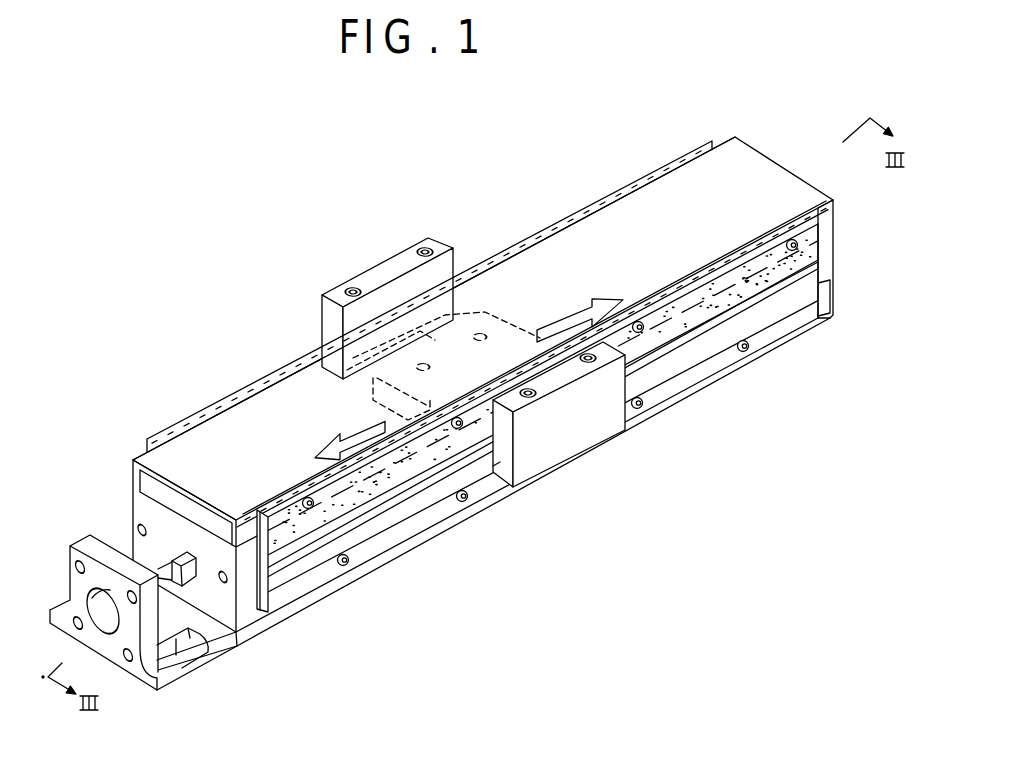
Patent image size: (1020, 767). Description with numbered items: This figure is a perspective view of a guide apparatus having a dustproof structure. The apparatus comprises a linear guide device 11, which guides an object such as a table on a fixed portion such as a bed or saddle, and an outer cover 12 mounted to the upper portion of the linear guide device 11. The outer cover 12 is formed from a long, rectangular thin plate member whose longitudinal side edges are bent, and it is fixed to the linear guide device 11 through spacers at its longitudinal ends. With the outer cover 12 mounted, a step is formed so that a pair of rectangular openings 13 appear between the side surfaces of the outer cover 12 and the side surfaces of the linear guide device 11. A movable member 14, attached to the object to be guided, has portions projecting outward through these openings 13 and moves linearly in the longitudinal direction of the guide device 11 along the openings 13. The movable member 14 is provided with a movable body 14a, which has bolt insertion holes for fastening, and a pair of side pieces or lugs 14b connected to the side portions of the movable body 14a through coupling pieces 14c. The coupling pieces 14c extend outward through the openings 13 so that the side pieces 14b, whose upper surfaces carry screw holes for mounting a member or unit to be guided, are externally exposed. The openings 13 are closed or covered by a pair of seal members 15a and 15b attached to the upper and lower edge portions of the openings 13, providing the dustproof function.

The linear guide device 11 is at (380, 584).
The outer cover 12 is at (278, 418).
The openings 13 is at (743, 288).
The movable member 14 is at (474, 344).
The movable body 14a is at (513, 350).
The side pieces (lugs) 14b is at (377, 273).
The coupling pieces 14c is at (430, 333).
The seal member 15a is at (415, 463).
The seal member 15b is at (402, 498).